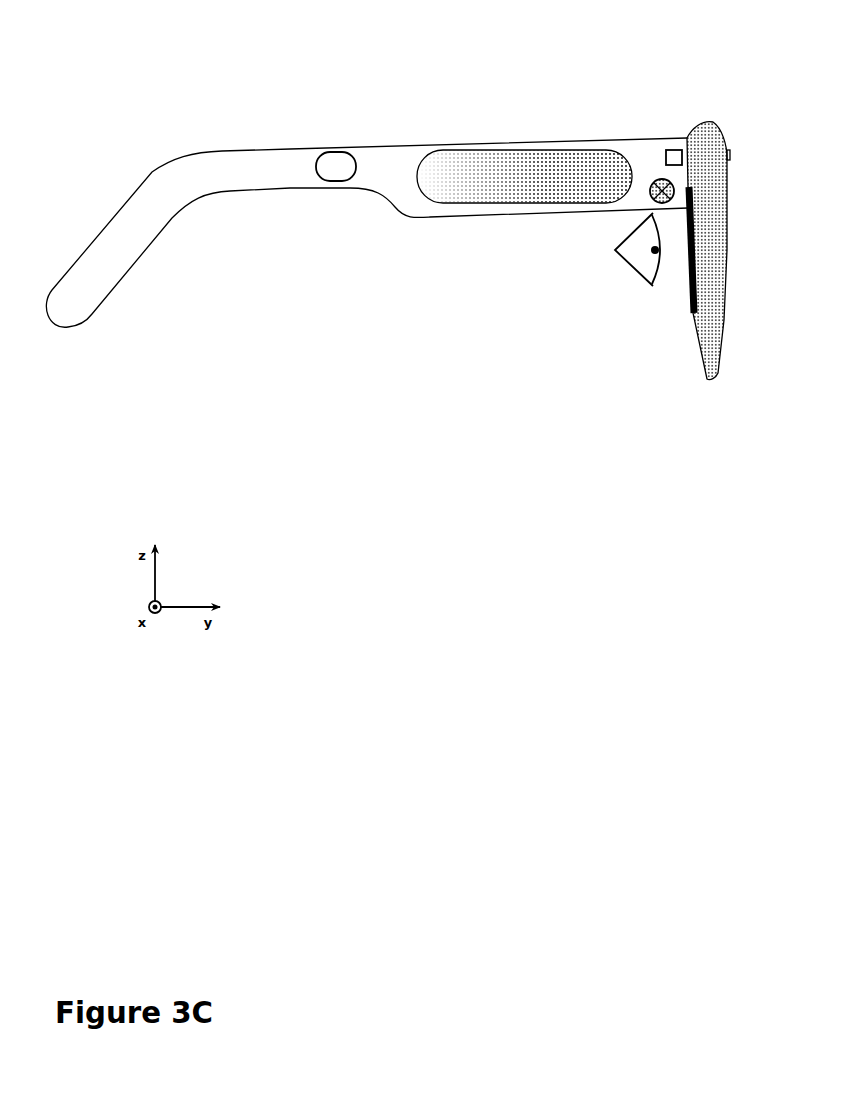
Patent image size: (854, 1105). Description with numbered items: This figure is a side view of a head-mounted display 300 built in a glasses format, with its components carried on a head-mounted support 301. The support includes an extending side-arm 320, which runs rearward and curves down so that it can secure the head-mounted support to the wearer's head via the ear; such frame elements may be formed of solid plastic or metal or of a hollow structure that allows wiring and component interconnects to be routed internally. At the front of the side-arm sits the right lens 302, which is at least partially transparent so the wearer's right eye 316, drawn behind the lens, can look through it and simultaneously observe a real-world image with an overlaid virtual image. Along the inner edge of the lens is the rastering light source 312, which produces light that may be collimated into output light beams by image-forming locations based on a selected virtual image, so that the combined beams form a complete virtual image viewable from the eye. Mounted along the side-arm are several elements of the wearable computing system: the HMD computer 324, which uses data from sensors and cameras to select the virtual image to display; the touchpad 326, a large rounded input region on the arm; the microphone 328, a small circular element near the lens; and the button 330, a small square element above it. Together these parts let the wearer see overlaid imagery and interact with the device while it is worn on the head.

The head-mounted display 300 is at (440, 392).
The head-mounted support 301 is at (391, 80).
The right lens 302 is at (707, 382).
The rastering light source 312 is at (690, 303).
The right eye 316 is at (640, 277).
The side-arm 320 is at (185, 208).
The HMD computer 324 is at (339, 150).
The touchpad 326 is at (527, 150).
The microphone 328 is at (655, 178).
The button 330 is at (677, 148).